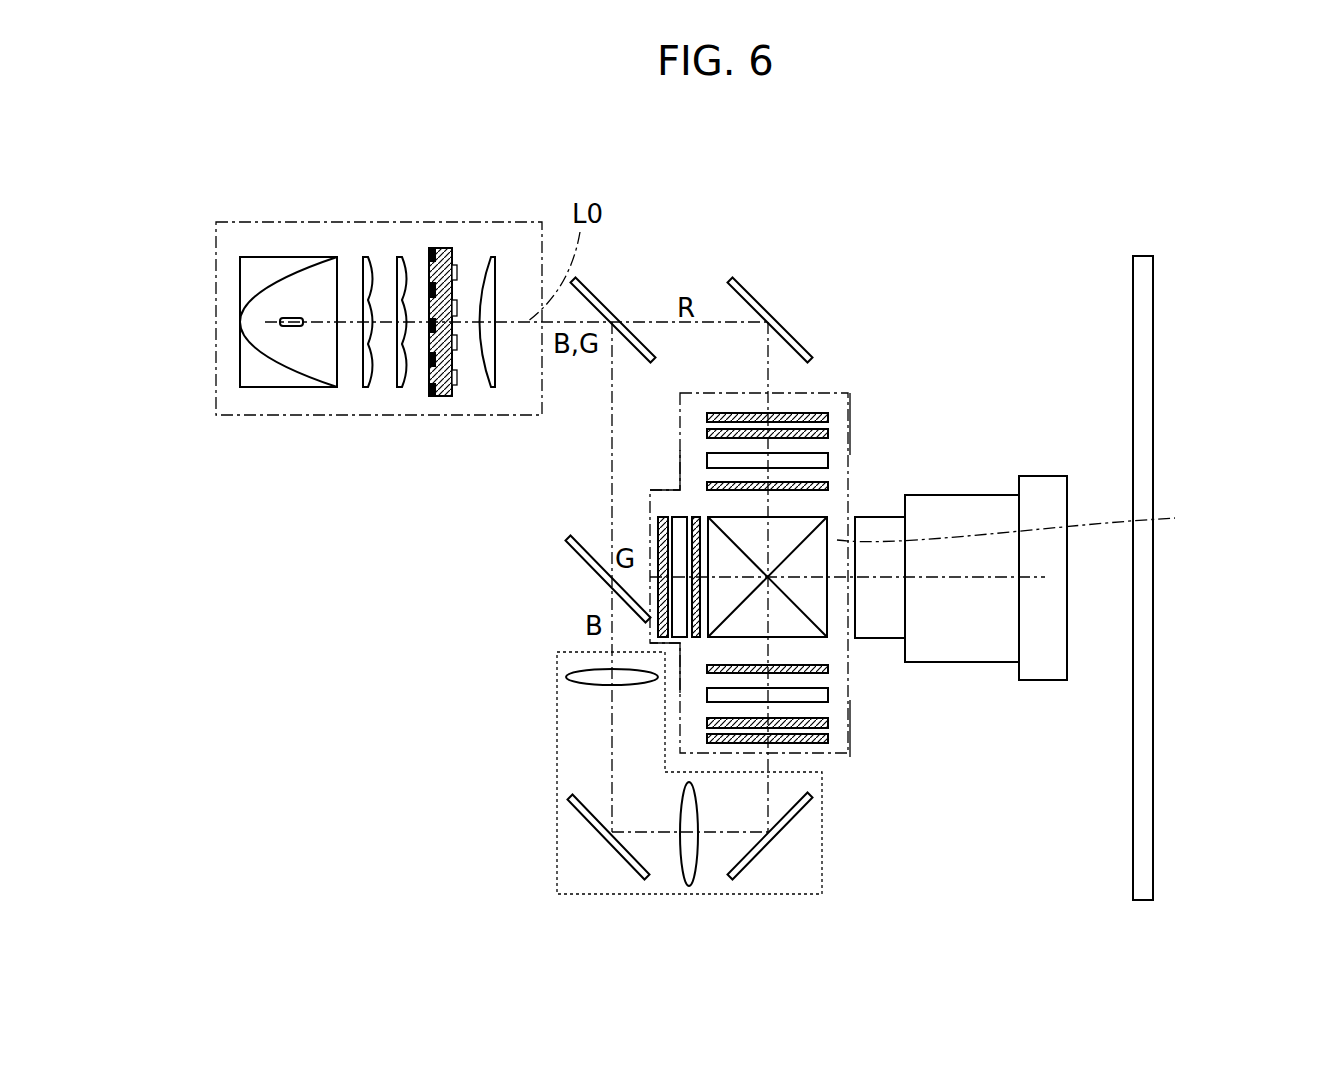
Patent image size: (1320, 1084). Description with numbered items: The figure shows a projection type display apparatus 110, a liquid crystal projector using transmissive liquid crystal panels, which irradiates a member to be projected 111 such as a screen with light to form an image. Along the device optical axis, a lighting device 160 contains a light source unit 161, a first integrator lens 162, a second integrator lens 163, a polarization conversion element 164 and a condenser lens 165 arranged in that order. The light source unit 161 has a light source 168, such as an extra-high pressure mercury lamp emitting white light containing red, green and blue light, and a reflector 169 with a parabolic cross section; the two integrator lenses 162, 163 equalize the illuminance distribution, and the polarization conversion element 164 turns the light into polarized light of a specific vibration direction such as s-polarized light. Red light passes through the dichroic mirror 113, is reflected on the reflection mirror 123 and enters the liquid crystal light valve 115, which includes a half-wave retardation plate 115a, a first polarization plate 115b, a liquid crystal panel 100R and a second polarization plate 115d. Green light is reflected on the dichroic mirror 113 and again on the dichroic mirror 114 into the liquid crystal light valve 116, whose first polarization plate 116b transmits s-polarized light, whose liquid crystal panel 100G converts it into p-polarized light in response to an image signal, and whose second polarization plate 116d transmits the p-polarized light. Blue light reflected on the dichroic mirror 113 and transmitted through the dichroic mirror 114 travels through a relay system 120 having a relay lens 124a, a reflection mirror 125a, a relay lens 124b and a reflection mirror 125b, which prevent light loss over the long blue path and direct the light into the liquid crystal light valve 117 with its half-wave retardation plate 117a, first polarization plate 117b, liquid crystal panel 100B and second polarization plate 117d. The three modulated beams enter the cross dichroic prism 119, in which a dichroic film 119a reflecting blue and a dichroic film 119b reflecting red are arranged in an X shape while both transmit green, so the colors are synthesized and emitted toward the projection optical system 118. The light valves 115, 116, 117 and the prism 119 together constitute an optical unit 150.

The projection type display apparatus 110 is at (878, 268).
The member to be projected 111 is at (1145, 265).
The dichroic mirror 113 is at (598, 297).
The dichroic mirror 114 is at (590, 565).
The liquid crystal light valve 115 is at (948, 333).
The λ/2 retardation plate 115a is at (828, 417).
The first polarization plate 115b is at (828, 433).
The liquid crystal panel 100R is at (828, 460).
The second polarization plate 115d is at (828, 486).
The liquid crystal light valve 116 is at (515, 428).
The first polarization plate 116b is at (663, 517).
The liquid crystal panel 100G is at (680, 512).
The second polarization plate 116d is at (700, 515).
The liquid crystal light valve 117 is at (948, 672).
The λ/2 retardation plate 117a is at (828, 742).
The first polarization plate 117b is at (828, 722).
The liquid crystal panel 100B is at (828, 697).
The second polarization plate 117d is at (828, 670).
The projection optical system 118 is at (1042, 672).
The cross dichroic prism 119 is at (822, 602).
The dichroic film 119a is at (828, 522).
The dichroic film 119b is at (710, 520).
The relay system 120 is at (785, 895).
The reflection mirror 123 is at (755, 297).
The relay lens 124a is at (575, 680).
The relay lens 124b is at (689, 875).
The reflection mirror 125a is at (620, 855).
The reflection mirror 125b is at (787, 828).
The optical unit 150 is at (1032, 523).
The lighting device 160 is at (278, 415).
The light source unit 161 is at (300, 170).
The first integrator lens 162 is at (368, 257).
The second integrator lens 163 is at (402, 257).
The polarization conversion element 164 is at (442, 250).
The condenser lens 165 is at (490, 260).
The light source 168 is at (295, 318).
The reflector 169 is at (270, 282).